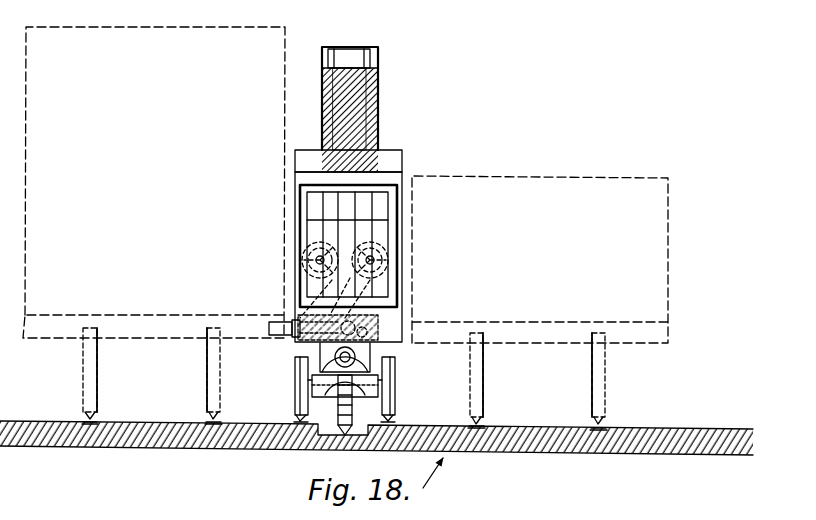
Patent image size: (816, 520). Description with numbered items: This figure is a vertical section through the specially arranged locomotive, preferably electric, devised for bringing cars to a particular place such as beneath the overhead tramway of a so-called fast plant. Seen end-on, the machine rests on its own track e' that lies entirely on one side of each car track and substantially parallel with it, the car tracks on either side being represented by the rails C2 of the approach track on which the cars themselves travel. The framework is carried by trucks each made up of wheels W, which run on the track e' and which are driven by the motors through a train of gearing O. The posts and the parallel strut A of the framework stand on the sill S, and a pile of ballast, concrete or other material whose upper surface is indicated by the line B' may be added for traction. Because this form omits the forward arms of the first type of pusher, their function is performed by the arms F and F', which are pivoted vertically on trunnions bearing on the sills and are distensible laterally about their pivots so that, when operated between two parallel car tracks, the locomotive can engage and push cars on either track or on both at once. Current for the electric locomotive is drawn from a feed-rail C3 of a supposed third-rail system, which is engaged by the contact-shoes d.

The parallel strut A is at (377, 47).
The upper surface of ballast pile B' is at (354, 41).
The pivoted lateral arm F is at (270, 312).
The pivoted lateral arm F' is at (405, 271).
The train of gearing O is at (320, 348).
The sill S is at (373, 348).
The wheel W is at (293, 375).
The locomotive track e' is at (350, 408).
The rail of approach track C2 is at (204, 417).
The contact-shoe d is at (332, 416).
The feed-rail C3 is at (333, 436).